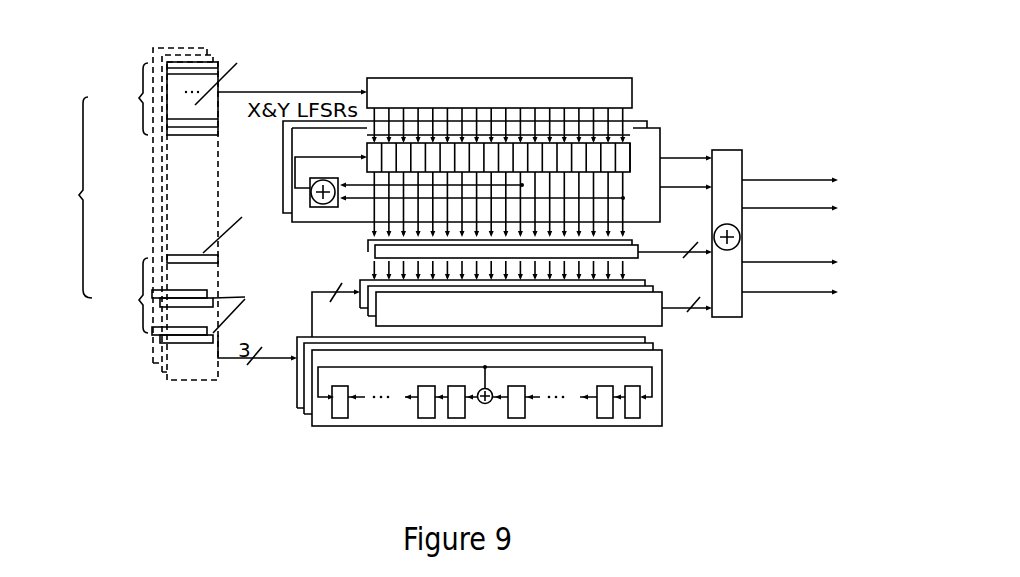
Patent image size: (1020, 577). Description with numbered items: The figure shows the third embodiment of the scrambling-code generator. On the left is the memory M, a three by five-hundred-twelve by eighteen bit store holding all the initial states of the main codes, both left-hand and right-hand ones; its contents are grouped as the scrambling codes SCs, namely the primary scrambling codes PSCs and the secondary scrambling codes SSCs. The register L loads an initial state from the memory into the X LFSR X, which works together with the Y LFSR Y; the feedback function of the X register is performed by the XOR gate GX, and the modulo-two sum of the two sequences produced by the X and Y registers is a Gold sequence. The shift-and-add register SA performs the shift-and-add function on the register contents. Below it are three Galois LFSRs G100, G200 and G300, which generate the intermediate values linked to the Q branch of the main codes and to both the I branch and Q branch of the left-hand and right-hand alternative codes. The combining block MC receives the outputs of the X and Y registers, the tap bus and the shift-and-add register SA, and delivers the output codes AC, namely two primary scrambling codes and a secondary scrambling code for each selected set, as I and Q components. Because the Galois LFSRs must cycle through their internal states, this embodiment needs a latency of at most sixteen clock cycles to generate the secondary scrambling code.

The memory M is at (105, 320).
The scrambling codes SCs is at (68, 197).
The primary scrambling codes PSCs is at (200, 94).
The secondary scrambling codes SSCs is at (192, 270).
The loading register L is at (612, 87).
The X LFSR X is at (290, 220).
The Y LFSR Y is at (648, 126).
The XOR gate GX is at (328, 207).
The shift-and-add register SA is at (653, 318).
The modulo adder / code combiner MC is at (782, 161).
The access code outputs AC is at (790, 299).
The Galois LFSR G100 is at (323, 427).
The Galois LFSR G200 is at (307, 412).
The Galois LFSR G300 is at (297, 365).